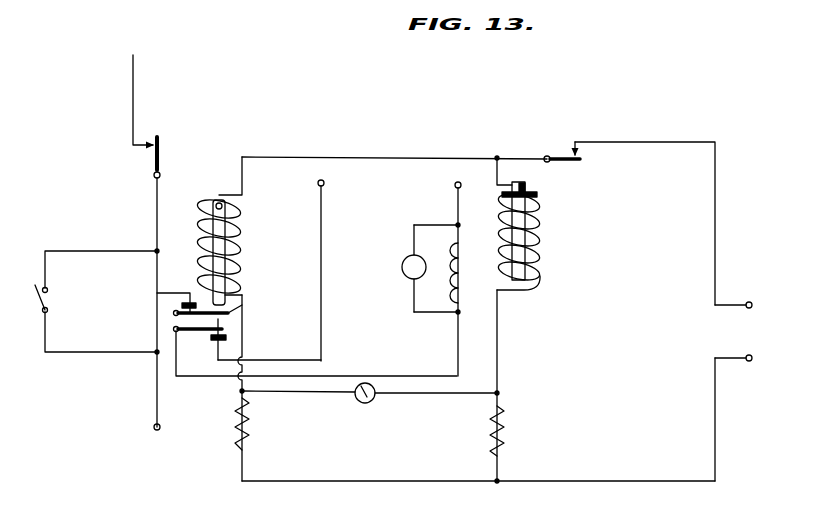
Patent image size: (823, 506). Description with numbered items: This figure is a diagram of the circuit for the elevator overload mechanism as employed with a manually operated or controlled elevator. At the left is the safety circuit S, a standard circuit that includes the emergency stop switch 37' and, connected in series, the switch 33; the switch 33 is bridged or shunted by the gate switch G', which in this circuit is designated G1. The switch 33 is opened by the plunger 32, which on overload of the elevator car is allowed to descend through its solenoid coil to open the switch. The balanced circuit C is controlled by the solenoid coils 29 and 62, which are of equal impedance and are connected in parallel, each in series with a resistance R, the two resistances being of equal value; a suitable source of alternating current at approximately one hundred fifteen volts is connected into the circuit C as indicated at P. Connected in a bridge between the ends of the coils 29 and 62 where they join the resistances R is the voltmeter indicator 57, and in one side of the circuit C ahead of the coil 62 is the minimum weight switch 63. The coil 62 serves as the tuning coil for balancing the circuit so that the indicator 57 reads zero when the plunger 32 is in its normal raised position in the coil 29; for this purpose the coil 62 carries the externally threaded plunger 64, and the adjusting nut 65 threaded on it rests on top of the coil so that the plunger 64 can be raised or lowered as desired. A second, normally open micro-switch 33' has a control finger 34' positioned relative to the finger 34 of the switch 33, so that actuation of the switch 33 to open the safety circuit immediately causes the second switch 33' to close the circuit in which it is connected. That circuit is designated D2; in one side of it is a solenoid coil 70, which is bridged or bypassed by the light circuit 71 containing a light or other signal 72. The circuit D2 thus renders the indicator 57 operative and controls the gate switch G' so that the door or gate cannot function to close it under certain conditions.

The safety circuit S is at (130, 102).
The emergency stop switch 37' is at (173, 157).
The gate switch G' is at (81, 301).
The plunger 32 is at (219, 201).
The solenoid coil 29 is at (243, 243).
The switch 33 is at (168, 303).
The control finger 34 is at (222, 305).
The control finger 34' is at (316, 352).
The second switch 33' is at (242, 338).
The circuit for the second switch D2 is at (324, 354).
The balanced circuit C is at (391, 155).
The light or signal 72 is at (410, 256).
The light circuit 71 is at (412, 296).
The solenoid coil 70 is at (464, 278).
The voltmeter indicator 57 is at (366, 404).
The resistance R is at (250, 441).
The minimum weight switch 63 is at (568, 165).
The source of A. C. P is at (724, 301).
The solenoid coil 62 is at (541, 246).
The plunger 64 is at (531, 177).
The adjusting nut 65 is at (538, 196).